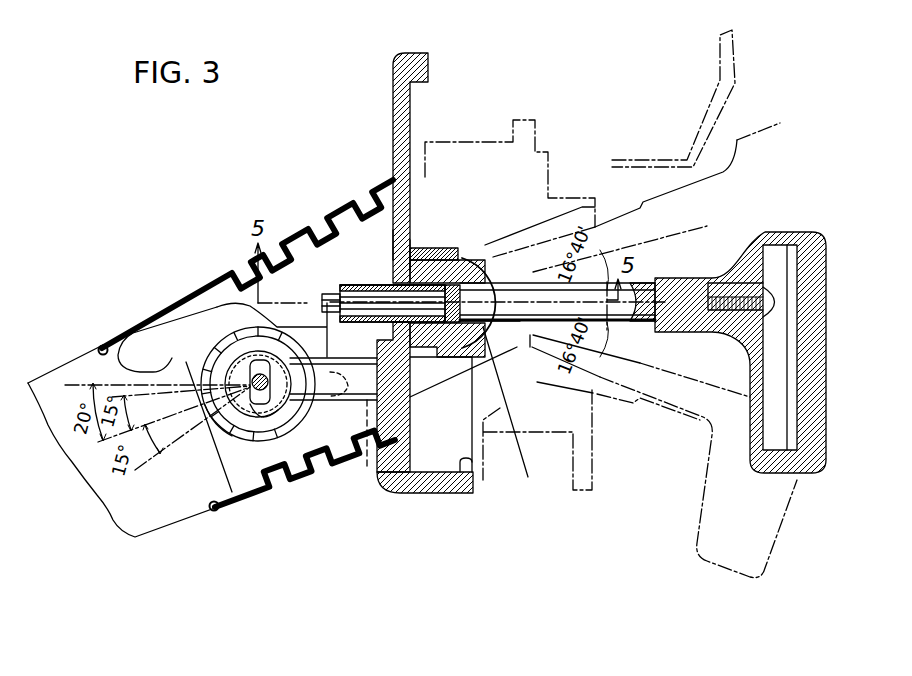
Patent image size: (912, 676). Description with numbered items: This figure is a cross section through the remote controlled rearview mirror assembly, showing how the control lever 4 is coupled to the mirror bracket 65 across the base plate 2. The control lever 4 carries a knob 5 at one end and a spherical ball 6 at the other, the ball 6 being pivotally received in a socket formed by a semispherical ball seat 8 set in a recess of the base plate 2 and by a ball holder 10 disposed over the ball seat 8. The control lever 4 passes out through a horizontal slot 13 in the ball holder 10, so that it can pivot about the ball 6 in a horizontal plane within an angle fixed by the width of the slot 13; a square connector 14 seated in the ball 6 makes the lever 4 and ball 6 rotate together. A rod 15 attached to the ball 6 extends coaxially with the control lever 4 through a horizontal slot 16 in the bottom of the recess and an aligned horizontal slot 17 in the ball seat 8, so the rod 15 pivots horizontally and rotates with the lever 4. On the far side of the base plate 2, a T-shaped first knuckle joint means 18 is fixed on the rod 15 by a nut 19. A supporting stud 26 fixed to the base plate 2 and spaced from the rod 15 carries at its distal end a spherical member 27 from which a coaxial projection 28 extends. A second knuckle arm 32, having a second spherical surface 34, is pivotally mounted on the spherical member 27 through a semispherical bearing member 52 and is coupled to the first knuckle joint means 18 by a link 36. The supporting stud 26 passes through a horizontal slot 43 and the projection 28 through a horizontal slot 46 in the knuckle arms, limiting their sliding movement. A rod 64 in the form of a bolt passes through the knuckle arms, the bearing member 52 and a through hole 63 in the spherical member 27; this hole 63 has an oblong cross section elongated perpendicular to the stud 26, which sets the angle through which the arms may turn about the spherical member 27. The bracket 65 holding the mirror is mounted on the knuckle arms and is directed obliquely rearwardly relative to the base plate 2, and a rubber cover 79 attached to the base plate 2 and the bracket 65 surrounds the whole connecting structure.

The base plate 2 is at (412, 100).
The control lever 4 is at (628, 312).
The knob 5 is at (826, 297).
The spherical ball 6 is at (452, 258).
The semispherical ball seat 8 is at (418, 250).
The ball holder 10 is at (463, 372).
The horizontal slot 13 is at (483, 258).
The square connector 14 is at (494, 312).
The rod 15 is at (343, 283).
The horizontal slot 16 is at (390, 232).
The horizontal slot 17 is at (403, 240).
The first knuckle joint means 18 is at (325, 238).
The nut 19 is at (337, 292).
The supporting stud 26 is at (328, 402).
The spherical member 27 is at (264, 408).
The coaxial projection 28 is at (140, 352).
The second knuckle arm 32 is at (230, 427).
The second spherical surface 34 is at (368, 464).
The link 36 is at (328, 334).
The horizontal slot 43 is at (298, 408).
The horizontal slot 46 is at (226, 380).
The semispherical bearing member 52 is at (218, 372).
The through hole 63 is at (248, 362).
The rod 64 is at (256, 406).
The bracket 65 is at (68, 372).
The cover 79 is at (220, 275).